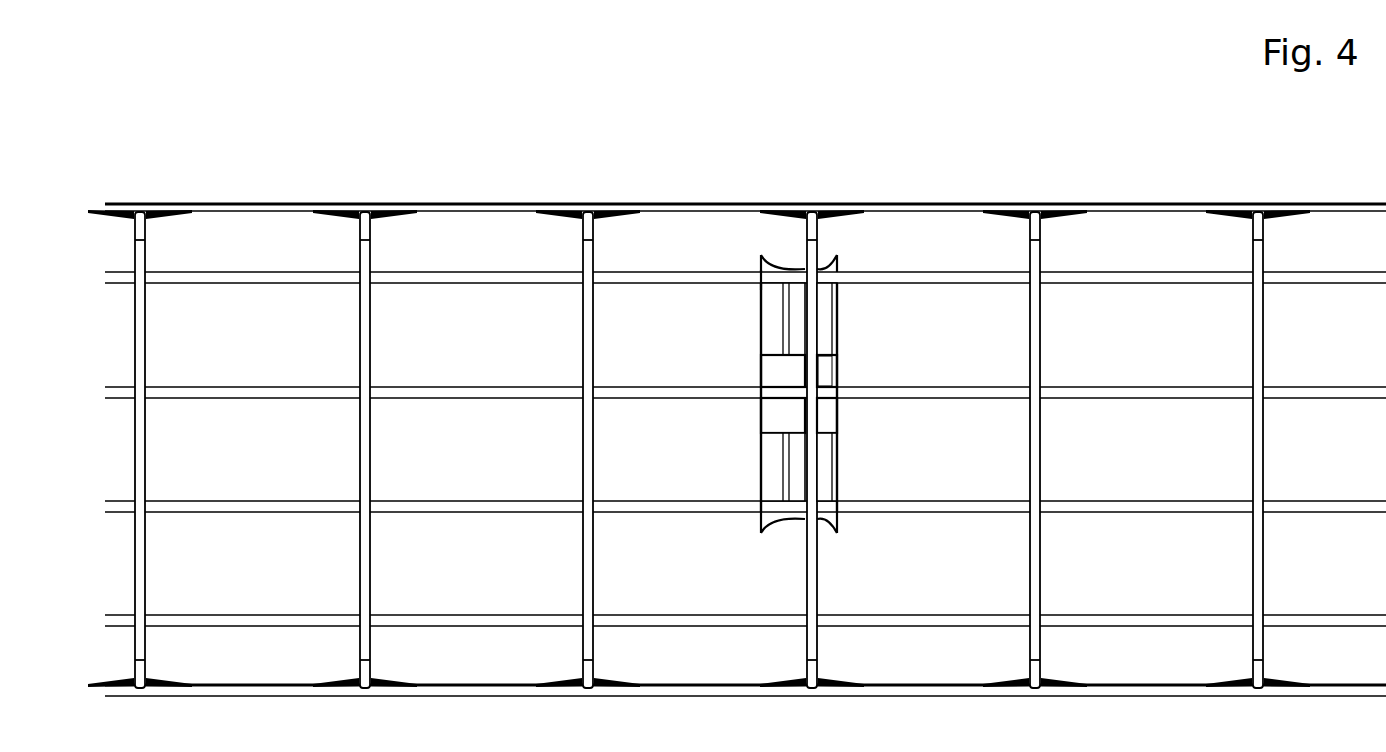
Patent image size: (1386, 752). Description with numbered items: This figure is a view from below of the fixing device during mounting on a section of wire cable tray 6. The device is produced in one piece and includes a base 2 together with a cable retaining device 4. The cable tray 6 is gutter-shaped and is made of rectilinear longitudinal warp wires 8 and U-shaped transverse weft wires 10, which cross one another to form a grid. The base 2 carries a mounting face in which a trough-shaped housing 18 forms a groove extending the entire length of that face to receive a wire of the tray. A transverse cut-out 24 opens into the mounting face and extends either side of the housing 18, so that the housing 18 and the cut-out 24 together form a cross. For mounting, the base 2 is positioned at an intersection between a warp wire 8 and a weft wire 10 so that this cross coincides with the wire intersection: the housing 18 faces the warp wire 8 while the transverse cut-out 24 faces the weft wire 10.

The base 2 is at (821, 394).
The cable retaining device 4 is at (826, 304).
The section of wire cable tray 6 is at (772, 367).
The warp wire 8 is at (1000, 396).
The weft wire 10 is at (813, 570).
The trough-shaped housing 18 is at (871, 352).
The transverse cut-out 24 is at (823, 368).